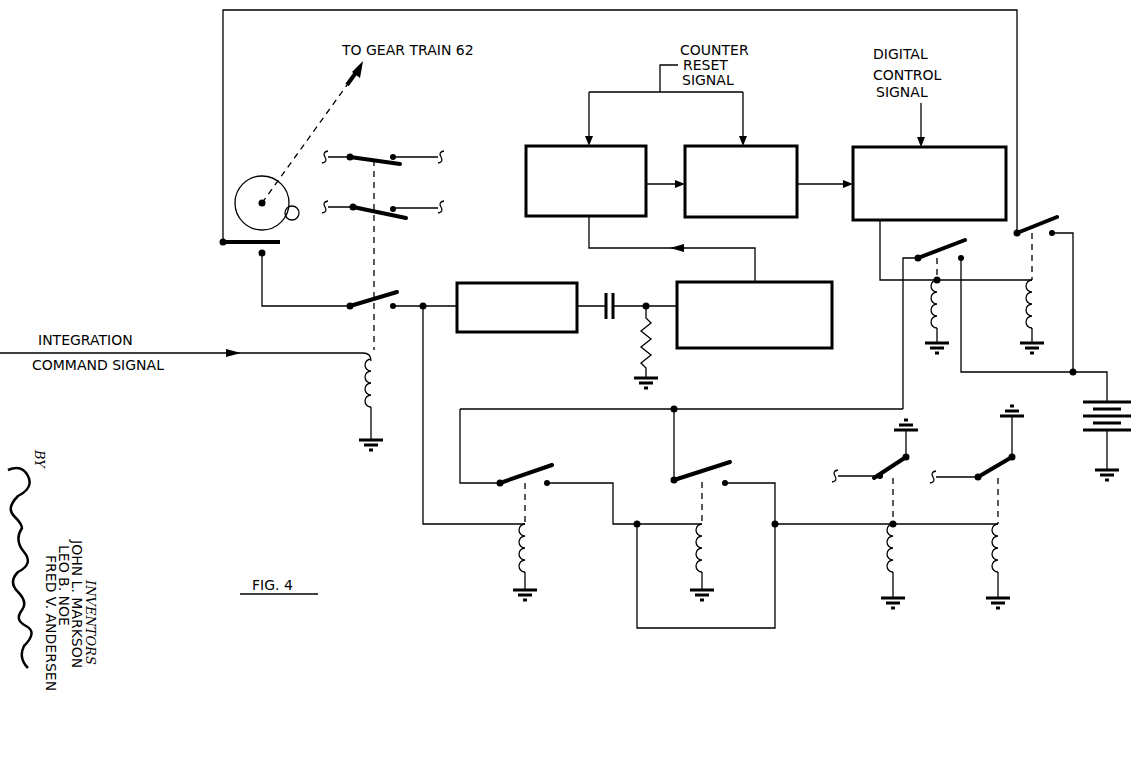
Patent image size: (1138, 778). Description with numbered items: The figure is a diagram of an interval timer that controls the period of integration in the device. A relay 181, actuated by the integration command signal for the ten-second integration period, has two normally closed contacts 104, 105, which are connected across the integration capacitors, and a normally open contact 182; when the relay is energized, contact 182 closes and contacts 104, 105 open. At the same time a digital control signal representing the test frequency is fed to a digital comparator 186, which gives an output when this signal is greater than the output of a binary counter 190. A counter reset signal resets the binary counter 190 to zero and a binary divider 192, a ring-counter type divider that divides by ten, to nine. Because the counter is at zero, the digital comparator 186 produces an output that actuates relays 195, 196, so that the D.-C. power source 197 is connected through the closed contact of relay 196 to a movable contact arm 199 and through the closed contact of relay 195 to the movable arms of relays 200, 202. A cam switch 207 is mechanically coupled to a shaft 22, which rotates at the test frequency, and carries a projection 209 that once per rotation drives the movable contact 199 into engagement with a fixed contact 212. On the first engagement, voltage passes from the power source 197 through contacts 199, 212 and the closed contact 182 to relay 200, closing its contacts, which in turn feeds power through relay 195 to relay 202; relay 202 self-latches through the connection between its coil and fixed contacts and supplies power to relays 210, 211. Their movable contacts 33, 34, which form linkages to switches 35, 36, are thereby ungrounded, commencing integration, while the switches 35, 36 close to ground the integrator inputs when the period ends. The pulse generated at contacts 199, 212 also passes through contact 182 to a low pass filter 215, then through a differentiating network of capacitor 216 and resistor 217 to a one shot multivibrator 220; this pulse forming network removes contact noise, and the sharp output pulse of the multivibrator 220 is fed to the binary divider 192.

The shaft 22 is at (324, 118).
The cam switch 207 is at (260, 192).
The projection 209 is at (292, 220).
The movable contact arm 199 is at (247, 244).
The fixed contact 212 is at (258, 256).
The contact 104 is at (376, 154).
The contact 105 is at (376, 210).
The contact 182 is at (386, 290).
The relay 181 is at (357, 358).
The low pass filter 215 is at (498, 292).
The capacitor 216 is at (613, 296).
The resistor 217 is at (640, 340).
The one shot multivibrator 220 is at (805, 340).
The binary divider 192 is at (563, 152).
The binary counter 190 is at (790, 160).
The digital comparator 186 is at (992, 159).
The relay 195 is at (949, 288).
The relay 196 is at (1044, 280).
The D.-C. power source 197 is at (1116, 398).
The switch 35 is at (893, 469).
The movable contact 33 is at (895, 497).
The relay 210 is at (898, 542).
The switch 36 is at (1013, 460).
The movable contact 34 is at (1000, 495).
The relay 211 is at (1005, 551).
The relay 200 is at (516, 537).
The relay 202 is at (716, 532).